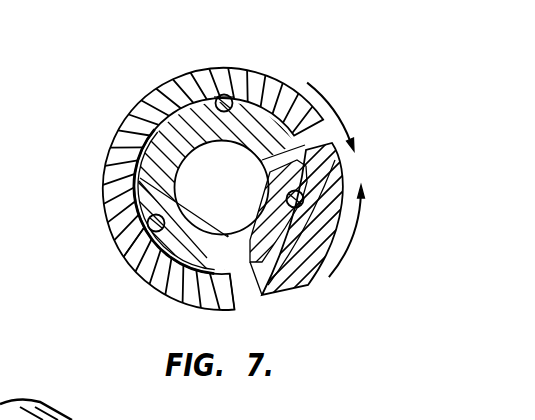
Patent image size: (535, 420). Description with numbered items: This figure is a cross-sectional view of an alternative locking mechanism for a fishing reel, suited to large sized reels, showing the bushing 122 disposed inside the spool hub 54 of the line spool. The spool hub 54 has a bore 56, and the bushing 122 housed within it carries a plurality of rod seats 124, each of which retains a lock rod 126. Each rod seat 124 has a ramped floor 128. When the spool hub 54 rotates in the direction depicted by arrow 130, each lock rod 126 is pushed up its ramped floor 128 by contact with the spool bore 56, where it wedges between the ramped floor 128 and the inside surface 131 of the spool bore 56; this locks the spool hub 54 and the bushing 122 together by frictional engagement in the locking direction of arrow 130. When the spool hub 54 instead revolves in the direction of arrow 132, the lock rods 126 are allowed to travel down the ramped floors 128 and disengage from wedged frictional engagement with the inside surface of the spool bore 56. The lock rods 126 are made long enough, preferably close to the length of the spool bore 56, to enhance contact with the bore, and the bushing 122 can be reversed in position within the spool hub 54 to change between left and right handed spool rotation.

The spool hub 54 is at (180, 80).
The bore 56 is at (218, 96).
The bushing 122 is at (150, 177).
The rod seat 124 is at (140, 267).
The lock rod 126 is at (237, 92).
The ramped floor 128 is at (157, 103).
The arrow 130 is at (333, 99).
The inside surface 131 is at (232, 264).
The arrow 132 is at (352, 243).